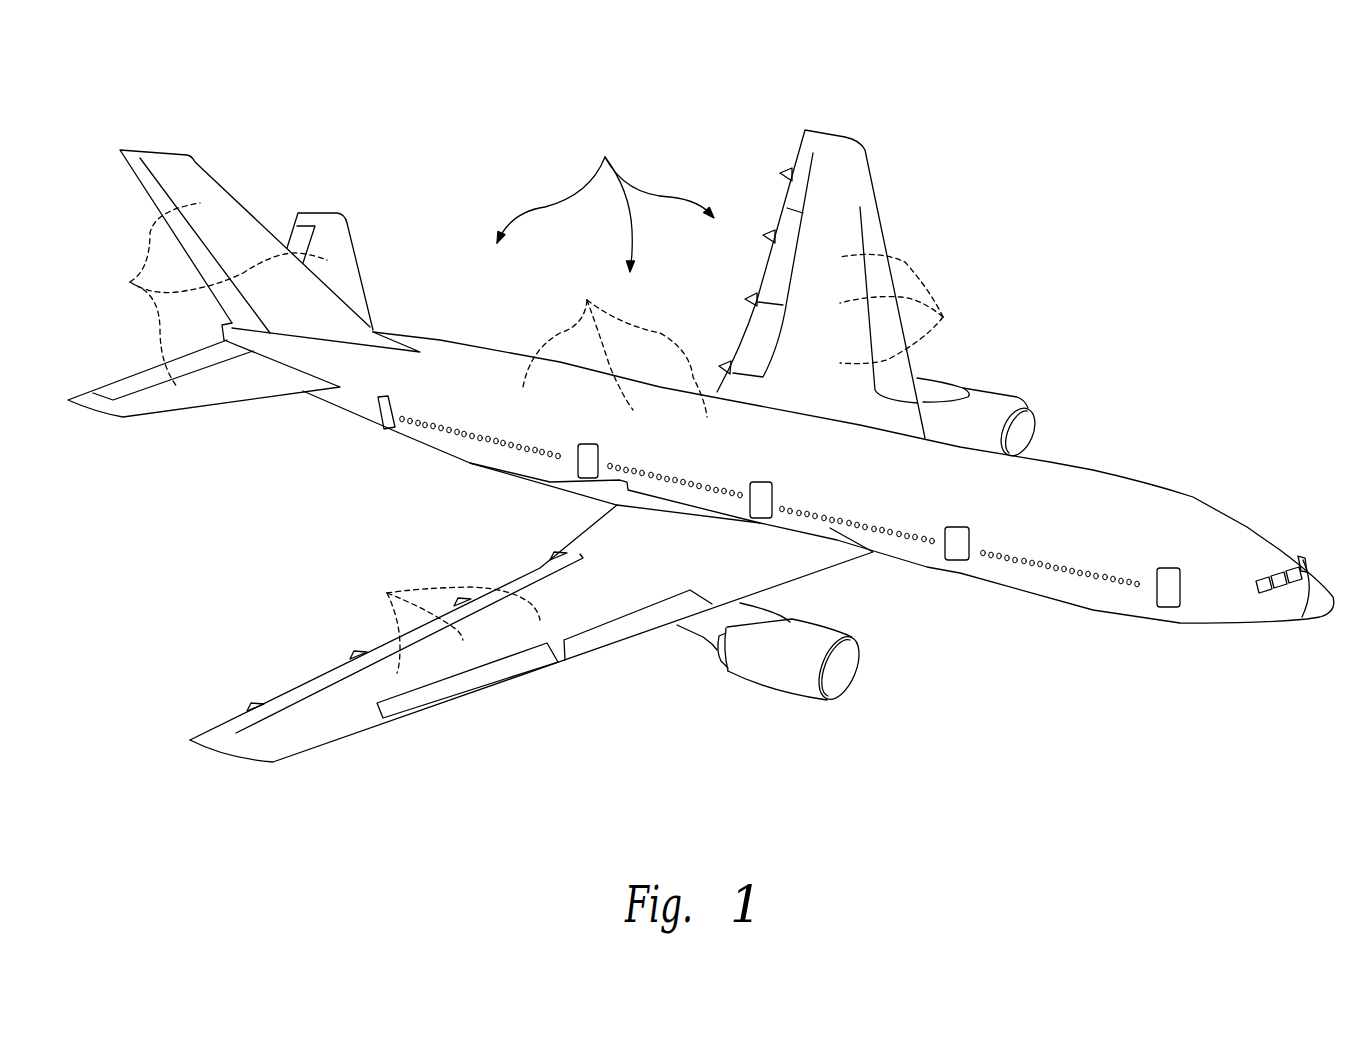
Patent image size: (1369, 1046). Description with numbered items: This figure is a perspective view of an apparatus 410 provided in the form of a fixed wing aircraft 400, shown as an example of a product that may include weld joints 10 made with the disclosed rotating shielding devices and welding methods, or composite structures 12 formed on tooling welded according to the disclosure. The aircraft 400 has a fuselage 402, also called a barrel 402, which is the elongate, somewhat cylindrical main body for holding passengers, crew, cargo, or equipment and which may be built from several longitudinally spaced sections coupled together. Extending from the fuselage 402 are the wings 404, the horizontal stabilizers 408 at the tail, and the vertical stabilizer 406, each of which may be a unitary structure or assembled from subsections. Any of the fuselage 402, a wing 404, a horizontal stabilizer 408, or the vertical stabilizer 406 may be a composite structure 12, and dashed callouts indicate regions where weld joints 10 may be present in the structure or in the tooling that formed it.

The weld joint 10 is at (130, 282).
The composite structure 12 is at (605, 157).
The aircraft 400 is at (1170, 203).
The fuselage 402 is at (1093, 470).
The wing 404 is at (870, 167).
The vertical stabilizer 406 is at (212, 178).
The horizontal stabilizer 408 is at (357, 260).
The apparatus 410 is at (1198, 118).